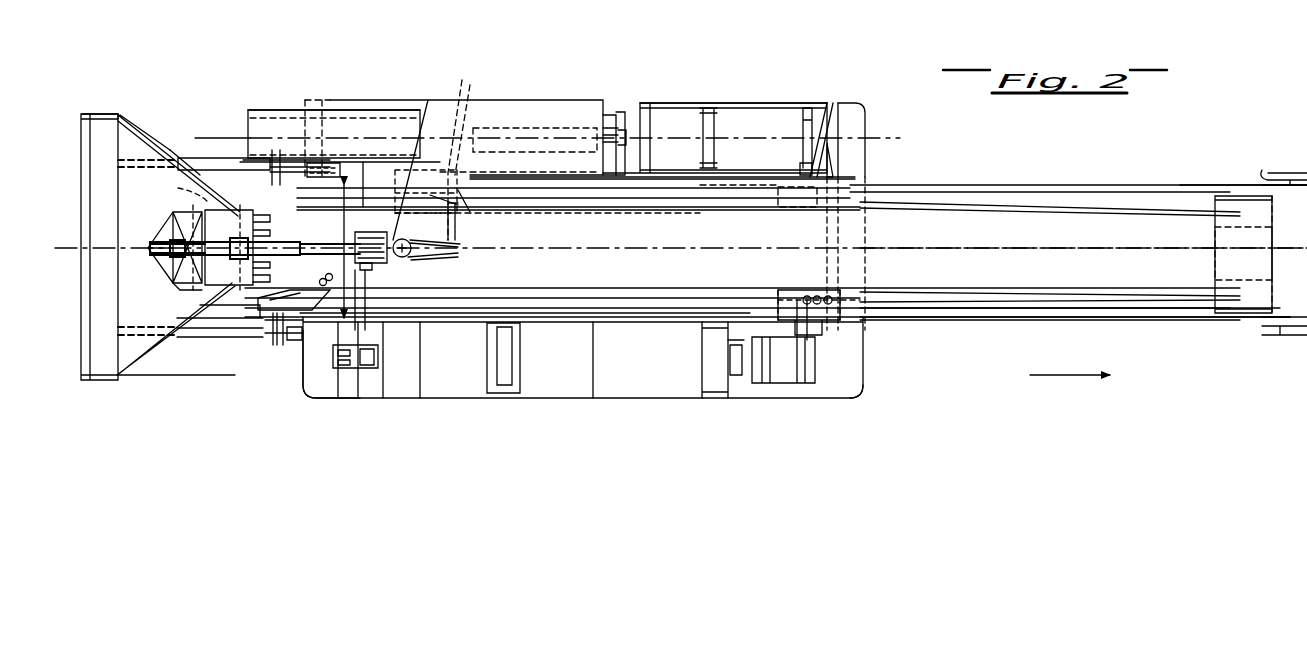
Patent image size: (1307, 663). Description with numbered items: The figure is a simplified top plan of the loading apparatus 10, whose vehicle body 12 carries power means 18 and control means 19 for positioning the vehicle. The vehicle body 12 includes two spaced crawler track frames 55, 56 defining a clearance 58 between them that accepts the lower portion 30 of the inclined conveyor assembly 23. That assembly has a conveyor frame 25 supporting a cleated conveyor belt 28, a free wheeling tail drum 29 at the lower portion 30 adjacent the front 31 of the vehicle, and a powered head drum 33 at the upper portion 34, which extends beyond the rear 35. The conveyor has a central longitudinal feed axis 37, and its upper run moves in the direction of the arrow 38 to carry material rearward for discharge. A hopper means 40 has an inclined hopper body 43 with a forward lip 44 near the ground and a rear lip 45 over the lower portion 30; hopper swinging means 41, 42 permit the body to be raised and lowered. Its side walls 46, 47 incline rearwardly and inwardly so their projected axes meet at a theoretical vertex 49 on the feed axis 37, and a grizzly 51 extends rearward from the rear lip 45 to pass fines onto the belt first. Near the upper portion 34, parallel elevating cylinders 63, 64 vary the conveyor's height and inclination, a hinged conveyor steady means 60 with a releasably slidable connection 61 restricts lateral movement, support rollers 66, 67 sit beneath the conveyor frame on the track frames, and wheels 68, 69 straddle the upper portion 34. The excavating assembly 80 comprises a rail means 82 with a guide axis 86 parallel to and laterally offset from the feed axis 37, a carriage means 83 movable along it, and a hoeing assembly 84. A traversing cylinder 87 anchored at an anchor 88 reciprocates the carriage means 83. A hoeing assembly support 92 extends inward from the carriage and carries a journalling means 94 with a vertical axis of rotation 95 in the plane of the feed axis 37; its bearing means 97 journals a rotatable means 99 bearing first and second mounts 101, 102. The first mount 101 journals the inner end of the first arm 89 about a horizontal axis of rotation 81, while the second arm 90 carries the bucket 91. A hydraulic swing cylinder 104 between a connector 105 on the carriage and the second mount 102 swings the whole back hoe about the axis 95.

The loading apparatus 10 is at (788, 73).
The vehicle body 12 is at (583, 386).
The power means 18 is at (781, 125).
The control means 19 is at (361, 382).
The inclined conveyor assembly 23 is at (942, 316).
The conveyor frame 25 is at (1060, 318).
The cleated conveyor belt 28 is at (934, 239).
The free wheeling tail drum 29 is at (187, 189).
The lower portion 30 is at (254, 328).
The front 31 is at (304, 367).
The powered head drum 33 is at (1256, 320).
The upper portion 34 is at (1200, 186).
The rear 35 is at (861, 390).
The longitudinal feed axis 37 is at (1038, 262).
The arrow 38 is at (1064, 380).
The hopper means 40 is at (193, 128).
The hopper swinging means 41 is at (213, 339).
The hopper swinging means 42 is at (240, 158).
The hopper body 43 is at (130, 115).
The forward lip 44 is at (82, 313).
The rear lip 45 is at (243, 228).
The side wall 46 is at (145, 113).
The side wall 47 is at (130, 374).
The theoretical vertex 49 is at (293, 259).
The grizzly 51 is at (245, 274).
The crawler track frame 55 is at (724, 103).
The crawler track frame 56 is at (546, 398).
The clearance 58 is at (342, 222).
The hinged conveyor steady means 60 is at (841, 131).
The releasably slidable connection 61 is at (797, 173).
The elevating cylinder 63 is at (860, 160).
The elevating cylinder 64 is at (837, 316).
The support roller 66 is at (804, 210).
The support roller 67 is at (801, 297).
The wheel 68 is at (1278, 171).
The wheel 69 is at (1292, 338).
The excavating assembly 80 is at (326, 72).
The horizontal axis of rotation 81 is at (374, 196).
The rail means 82 is at (362, 110).
The carriage means 83 is at (515, 109).
The hoeing assembly 84 is at (310, 245).
The guide axis 86 is at (875, 146).
The traversing cylinder 87 is at (580, 109).
The anchor 88 is at (623, 111).
The first arm 89 is at (330, 281).
The second arm 90 is at (174, 220).
The bucket 91 is at (181, 282).
The hoeing assembly support 92 is at (460, 221).
The journalling means 94 is at (404, 258).
The vertical axis of rotation 95 is at (372, 263).
The bearing means 97 is at (445, 243).
The rotatable means 99 is at (403, 240).
The first mount 101 is at (353, 334).
The second mount 102 is at (455, 252).
The hydraulic swing cylinder 104 is at (460, 202).
The connector 105 is at (458, 109).